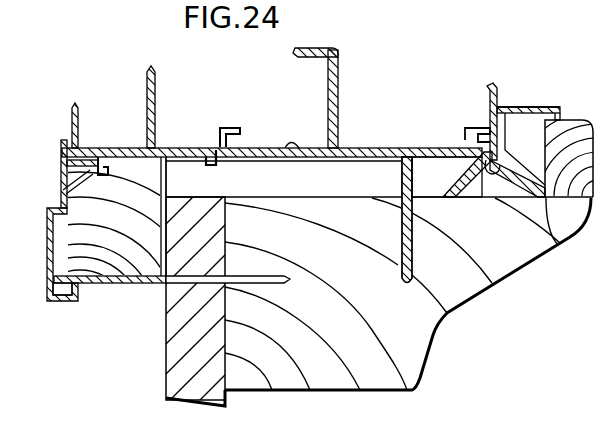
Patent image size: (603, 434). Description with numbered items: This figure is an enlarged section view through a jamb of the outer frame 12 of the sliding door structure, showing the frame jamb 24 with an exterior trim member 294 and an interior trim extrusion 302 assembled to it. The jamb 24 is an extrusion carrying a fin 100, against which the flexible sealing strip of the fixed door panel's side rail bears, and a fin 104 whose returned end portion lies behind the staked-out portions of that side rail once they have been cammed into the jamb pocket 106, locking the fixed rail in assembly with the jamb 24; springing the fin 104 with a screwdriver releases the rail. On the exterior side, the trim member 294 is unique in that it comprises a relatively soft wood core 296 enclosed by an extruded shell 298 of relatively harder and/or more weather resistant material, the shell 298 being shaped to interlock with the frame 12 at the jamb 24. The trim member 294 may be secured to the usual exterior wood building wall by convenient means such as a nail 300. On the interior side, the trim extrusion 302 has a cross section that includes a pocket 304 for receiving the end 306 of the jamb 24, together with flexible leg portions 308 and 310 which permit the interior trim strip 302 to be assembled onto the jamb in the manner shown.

The outer frame 12 is at (320, 50).
The jamb extrusion 24 is at (362, 147).
The fin 100 is at (147, 102).
The fin 104 is at (338, 82).
The jamb pocket 106 is at (295, 149).
The exterior trim member 294 is at (62, 142).
The wood core 296 is at (163, 150).
The extruded shell 298 is at (68, 303).
The nail 300 is at (115, 284).
The interior trim extrusion 302 is at (516, 105).
The pocket 304 is at (484, 158).
The end of jamb 306 is at (492, 176).
The flexible leg portion 308 is at (463, 199).
The flexible leg portion 310 is at (557, 244).